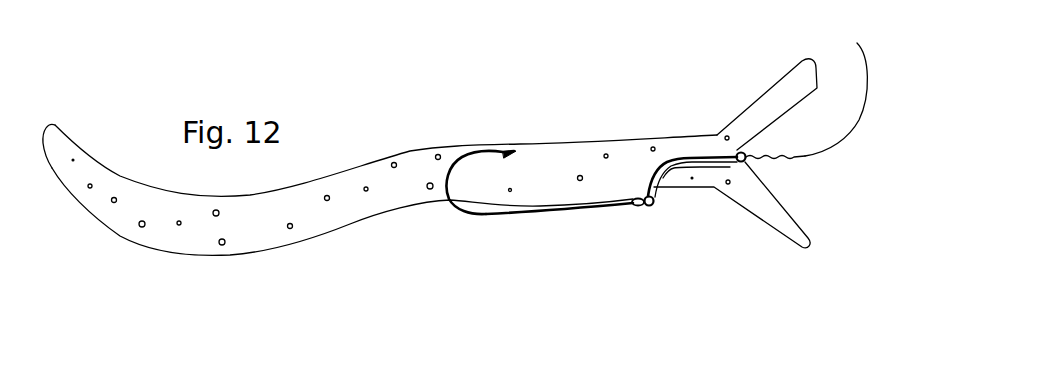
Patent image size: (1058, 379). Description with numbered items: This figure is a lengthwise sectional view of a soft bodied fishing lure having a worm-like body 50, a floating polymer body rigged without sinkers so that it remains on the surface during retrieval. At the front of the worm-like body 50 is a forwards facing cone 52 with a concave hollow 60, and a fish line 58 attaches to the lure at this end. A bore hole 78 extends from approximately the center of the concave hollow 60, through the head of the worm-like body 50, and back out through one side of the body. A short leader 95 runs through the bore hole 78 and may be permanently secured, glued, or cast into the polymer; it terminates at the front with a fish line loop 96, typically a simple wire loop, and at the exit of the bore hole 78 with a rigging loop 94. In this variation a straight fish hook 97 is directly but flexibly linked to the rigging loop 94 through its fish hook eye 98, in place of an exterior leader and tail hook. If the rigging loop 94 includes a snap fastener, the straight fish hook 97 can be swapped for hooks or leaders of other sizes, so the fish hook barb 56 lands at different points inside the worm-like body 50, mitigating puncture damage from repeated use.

The worm-like body 50 is at (100, 222).
The forwards facing cone 52 is at (805, 60).
The fish hook barb 56 is at (513, 194).
The fish line 58 is at (760, 167).
The concave hollow 60 is at (772, 198).
The bore hole 78 is at (676, 157).
The rigging loop 94 is at (648, 207).
The short leader 95 is at (659, 180).
The fish line loop 96 is at (753, 159).
The straight fish hook 97 is at (483, 214).
The fish hook eye 98 is at (637, 206).